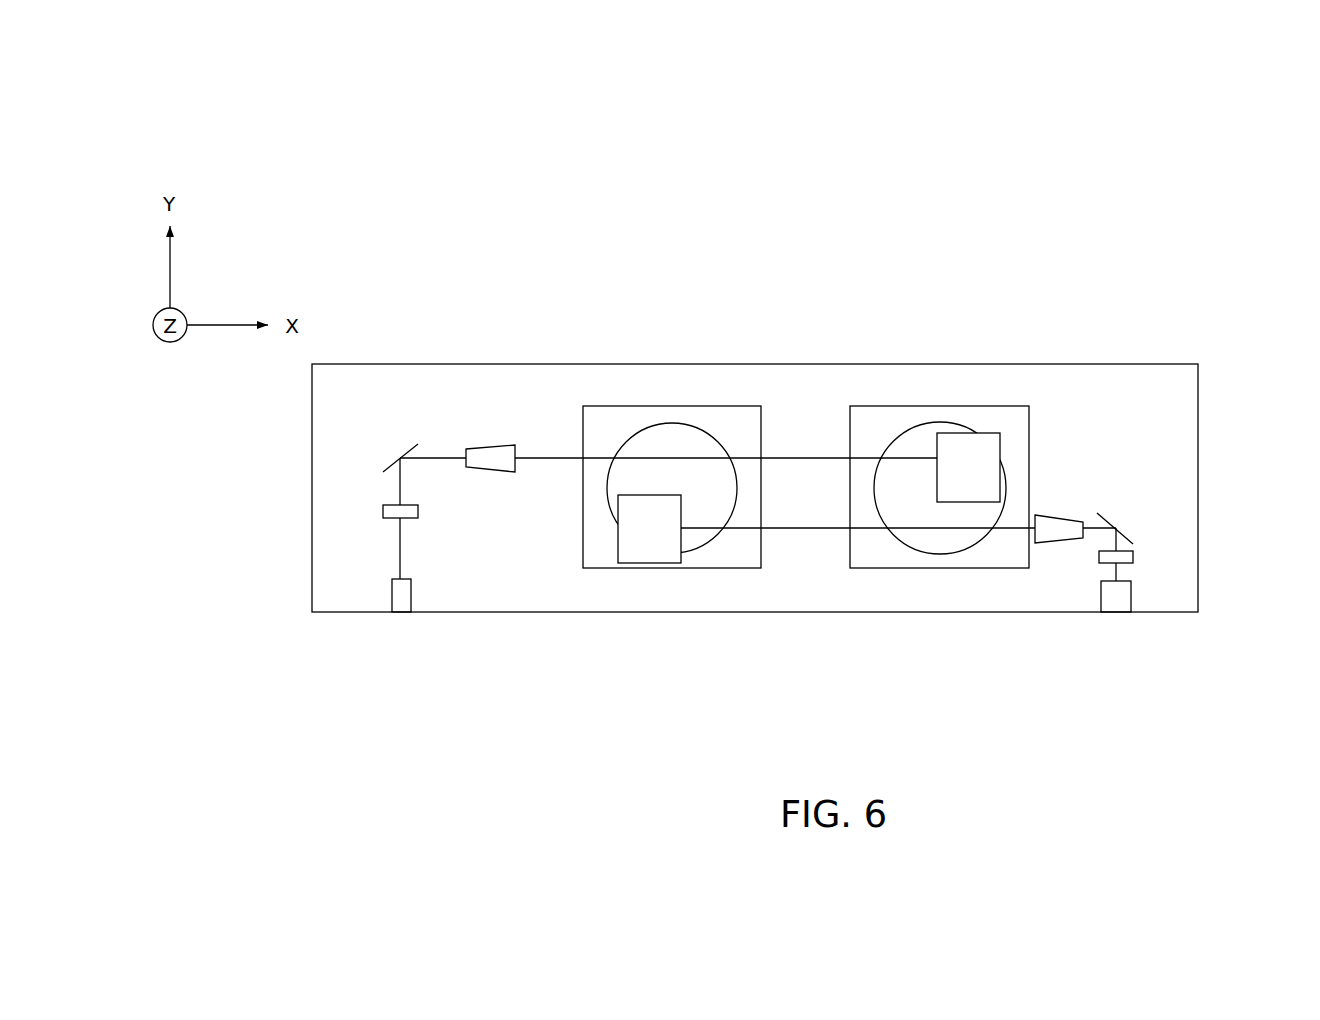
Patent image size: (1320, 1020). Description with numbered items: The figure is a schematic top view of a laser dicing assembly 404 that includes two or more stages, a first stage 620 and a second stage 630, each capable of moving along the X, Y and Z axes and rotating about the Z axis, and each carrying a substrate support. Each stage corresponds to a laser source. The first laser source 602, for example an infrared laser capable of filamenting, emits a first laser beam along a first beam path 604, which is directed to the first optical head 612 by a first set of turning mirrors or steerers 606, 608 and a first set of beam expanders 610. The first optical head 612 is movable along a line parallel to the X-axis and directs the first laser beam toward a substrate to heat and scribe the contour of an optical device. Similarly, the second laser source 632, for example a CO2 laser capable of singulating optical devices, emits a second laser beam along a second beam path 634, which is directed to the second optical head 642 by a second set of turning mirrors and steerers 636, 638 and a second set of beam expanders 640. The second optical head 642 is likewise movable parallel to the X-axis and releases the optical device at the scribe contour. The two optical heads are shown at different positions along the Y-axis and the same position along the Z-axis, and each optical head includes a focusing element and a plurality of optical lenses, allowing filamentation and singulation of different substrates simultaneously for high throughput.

The laser dicing assembly 404 is at (235, 120).
The first laser source 602 is at (407, 615).
The first beam path 604 is at (555, 462).
The turning mirror or steerer 606 is at (382, 505).
The turning mirror or steerer 608 is at (407, 445).
The beam expander 610 is at (505, 442).
The first optical head 612 is at (958, 428).
The first stage 620 is at (667, 400).
The second stage 630 is at (918, 400).
The second laser source 632 is at (1122, 615).
The second beam path 634 is at (827, 532).
The turning mirror or steerer 636 is at (1137, 553).
The turning mirror or steerer 638 is at (1112, 515).
The beam expander 640 is at (1053, 548).
The second optical head 642 is at (643, 565).